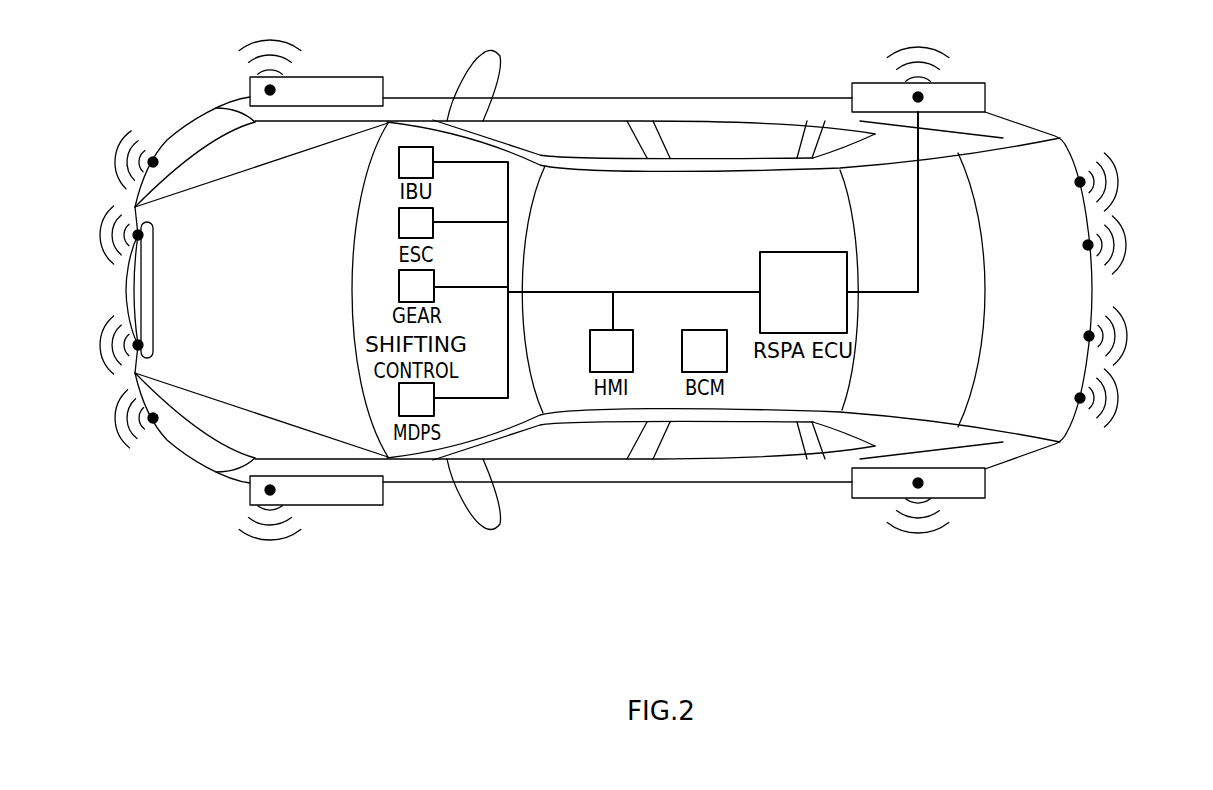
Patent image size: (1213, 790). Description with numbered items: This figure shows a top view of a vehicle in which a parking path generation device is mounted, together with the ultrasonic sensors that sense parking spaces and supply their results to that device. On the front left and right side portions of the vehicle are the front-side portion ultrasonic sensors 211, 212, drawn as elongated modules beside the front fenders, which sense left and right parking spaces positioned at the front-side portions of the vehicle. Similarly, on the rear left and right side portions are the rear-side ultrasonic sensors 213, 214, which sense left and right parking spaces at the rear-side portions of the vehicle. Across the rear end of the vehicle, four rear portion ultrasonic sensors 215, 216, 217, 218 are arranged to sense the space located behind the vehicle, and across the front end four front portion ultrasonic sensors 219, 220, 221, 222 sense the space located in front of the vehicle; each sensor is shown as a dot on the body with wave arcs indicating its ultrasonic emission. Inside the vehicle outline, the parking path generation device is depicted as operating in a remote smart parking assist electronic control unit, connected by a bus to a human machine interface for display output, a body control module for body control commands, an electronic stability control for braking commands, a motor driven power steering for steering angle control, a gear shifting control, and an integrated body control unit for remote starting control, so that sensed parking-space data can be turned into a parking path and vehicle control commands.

The front-side portion ultrasonic sensor 211 is at (270, 90).
The front-side portion ultrasonic sensor 212 is at (270, 490).
The rear-side ultrasonic sensor 213 is at (918, 97).
The rear-side ultrasonic sensor 214 is at (918, 483).
The rear portion ultrasonic sensor 215 is at (1080, 182).
The rear portion ultrasonic sensor 216 is at (1088, 245).
The rear portion ultrasonic sensor 217 is at (1089, 336).
The rear portion ultrasonic sensor 218 is at (1080, 398).
The front portion ultrasonic sensor 219 is at (153, 162).
The front portion ultrasonic sensor 220 is at (138, 235).
The front portion ultrasonic sensor 221 is at (138, 345).
The front portion ultrasonic sensor 222 is at (153, 418).